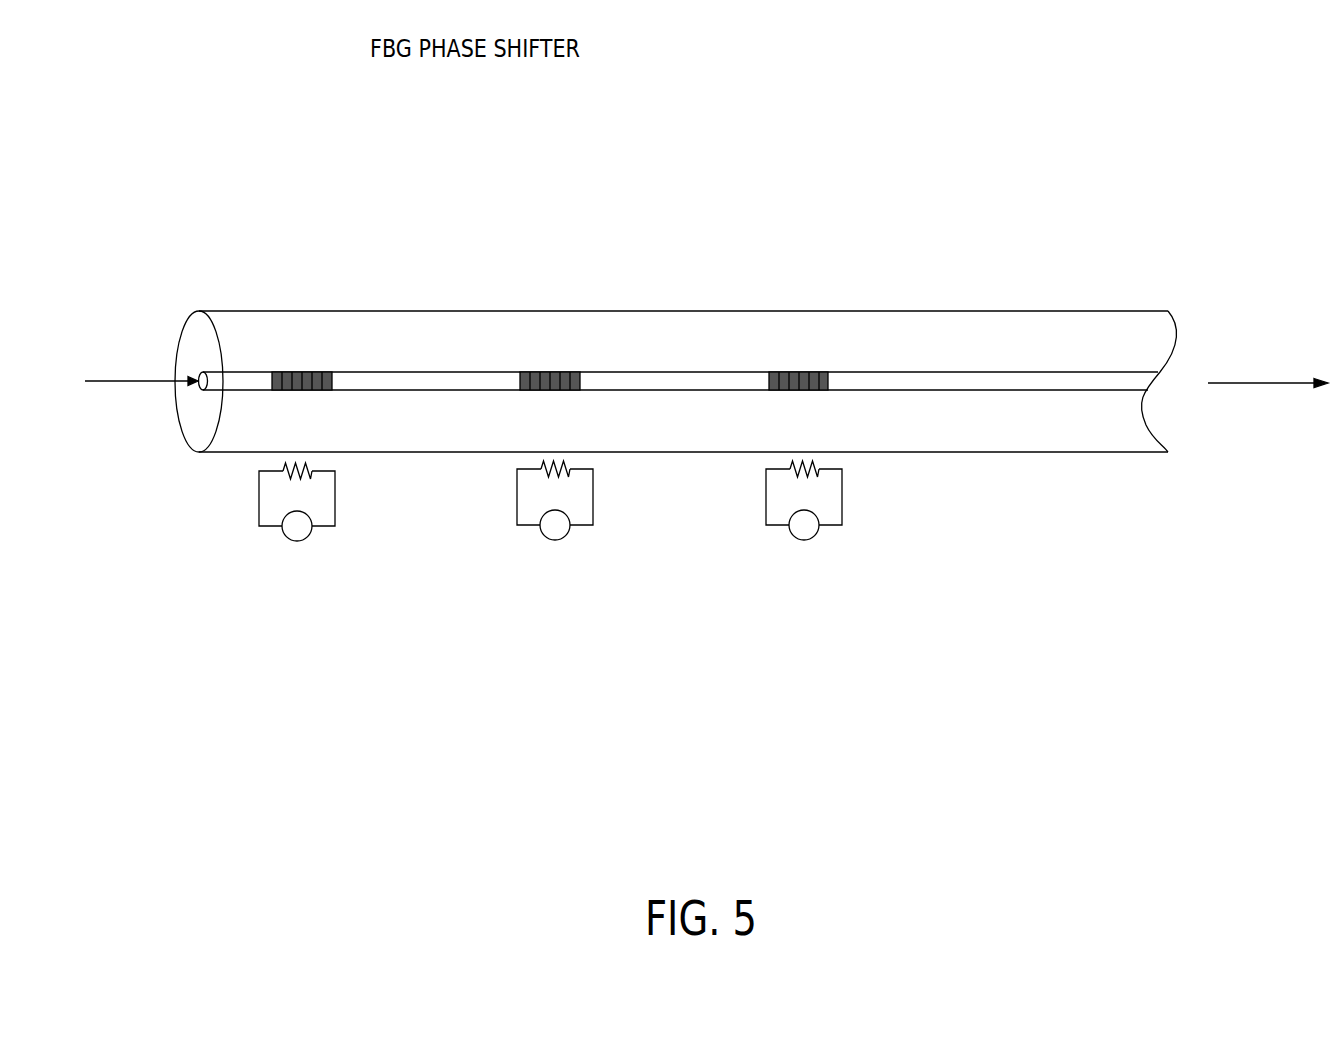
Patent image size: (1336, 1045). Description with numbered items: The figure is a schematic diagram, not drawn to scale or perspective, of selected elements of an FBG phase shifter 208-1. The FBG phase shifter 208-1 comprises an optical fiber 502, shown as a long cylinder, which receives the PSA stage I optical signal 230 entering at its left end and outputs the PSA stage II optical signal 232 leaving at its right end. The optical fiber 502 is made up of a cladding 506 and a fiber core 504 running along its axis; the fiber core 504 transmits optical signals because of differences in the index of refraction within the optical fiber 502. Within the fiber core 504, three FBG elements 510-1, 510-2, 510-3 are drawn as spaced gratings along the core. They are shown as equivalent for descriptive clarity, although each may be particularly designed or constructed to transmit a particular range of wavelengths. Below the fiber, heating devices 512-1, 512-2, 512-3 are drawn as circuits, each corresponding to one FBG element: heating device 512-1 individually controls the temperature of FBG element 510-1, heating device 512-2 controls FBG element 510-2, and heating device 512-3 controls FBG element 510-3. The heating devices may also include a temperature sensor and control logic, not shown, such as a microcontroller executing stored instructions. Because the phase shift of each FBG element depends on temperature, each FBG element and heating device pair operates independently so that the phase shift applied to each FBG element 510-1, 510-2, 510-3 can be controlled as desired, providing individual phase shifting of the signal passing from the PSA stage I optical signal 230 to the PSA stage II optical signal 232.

The FBG phase shifter 208-1 is at (175, 65).
The optical fiber 502 is at (277, 311).
The fiber core 504 is at (429, 372).
The cladding 506 is at (265, 444).
The FBG element 510-1 is at (297, 372).
The FBG element 510-2 is at (550, 372).
The FBG element 510-3 is at (802, 372).
The heating device 512-1 is at (259, 502).
The heating device 512-2 is at (517, 497).
The heating device 512-3 is at (766, 497).
The PSA stage I optical signal 230 is at (136, 380).
The PSA stage II optical signal 232 is at (1262, 383).